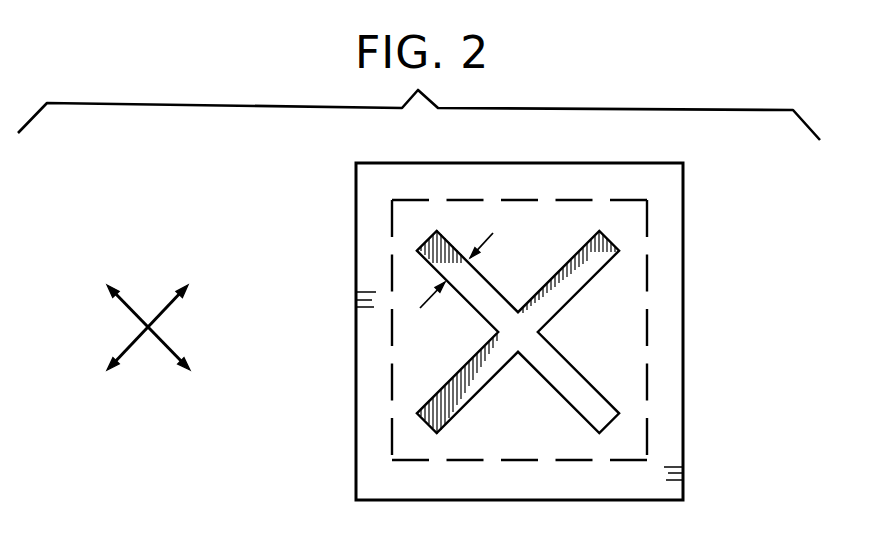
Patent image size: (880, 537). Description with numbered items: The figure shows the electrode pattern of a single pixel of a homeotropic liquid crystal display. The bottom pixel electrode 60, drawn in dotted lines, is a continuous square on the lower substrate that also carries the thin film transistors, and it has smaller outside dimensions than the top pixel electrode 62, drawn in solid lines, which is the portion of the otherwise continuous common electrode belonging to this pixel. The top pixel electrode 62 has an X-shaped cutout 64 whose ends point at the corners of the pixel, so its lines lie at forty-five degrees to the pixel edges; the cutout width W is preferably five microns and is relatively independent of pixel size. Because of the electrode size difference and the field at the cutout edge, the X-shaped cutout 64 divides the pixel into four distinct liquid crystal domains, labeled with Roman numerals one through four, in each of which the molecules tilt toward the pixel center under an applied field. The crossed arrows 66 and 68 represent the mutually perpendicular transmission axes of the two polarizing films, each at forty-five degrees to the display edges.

The bottom pixel electrode 60 is at (647, 282).
The top pixel electrode 62 is at (683, 366).
The X-shaped cutout 64 is at (608, 427).
The transmission axis line 66 is at (132, 343).
The transmission axis line 68 is at (167, 343).